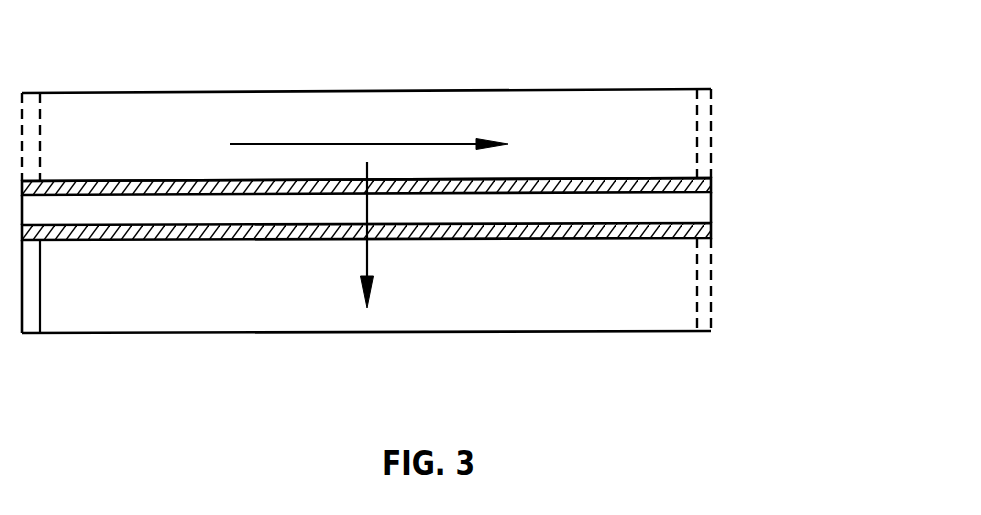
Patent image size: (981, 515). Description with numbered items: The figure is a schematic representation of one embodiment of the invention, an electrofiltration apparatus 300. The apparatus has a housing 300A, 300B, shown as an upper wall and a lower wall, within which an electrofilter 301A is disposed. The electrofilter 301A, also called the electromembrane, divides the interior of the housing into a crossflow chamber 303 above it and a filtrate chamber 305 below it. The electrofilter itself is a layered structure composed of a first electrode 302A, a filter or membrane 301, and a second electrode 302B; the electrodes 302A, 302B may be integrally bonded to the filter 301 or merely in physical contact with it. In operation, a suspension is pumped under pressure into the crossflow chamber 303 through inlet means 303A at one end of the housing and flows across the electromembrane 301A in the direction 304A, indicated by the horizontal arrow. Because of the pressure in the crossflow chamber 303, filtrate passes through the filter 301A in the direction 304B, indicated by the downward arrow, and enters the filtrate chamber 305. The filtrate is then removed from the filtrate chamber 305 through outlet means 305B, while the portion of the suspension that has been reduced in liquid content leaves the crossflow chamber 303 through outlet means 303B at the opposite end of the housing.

The apparatus 300 is at (424, 200).
The housing 300A is at (681, 90).
The housing 300B is at (42, 305).
The filter 301 is at (675, 208).
The electrofilter 301A is at (625, 176).
The first electrode 302A is at (513, 178).
The second electrode 302B is at (620, 240).
The crossflow chamber 303 is at (613, 147).
The inlet means 303A is at (42, 112).
The outlet means 303B is at (712, 127).
The direction 304A is at (278, 144).
The direction 304B is at (368, 266).
The filtrate chamber 305 is at (573, 295).
The outlet means 305B is at (712, 297).